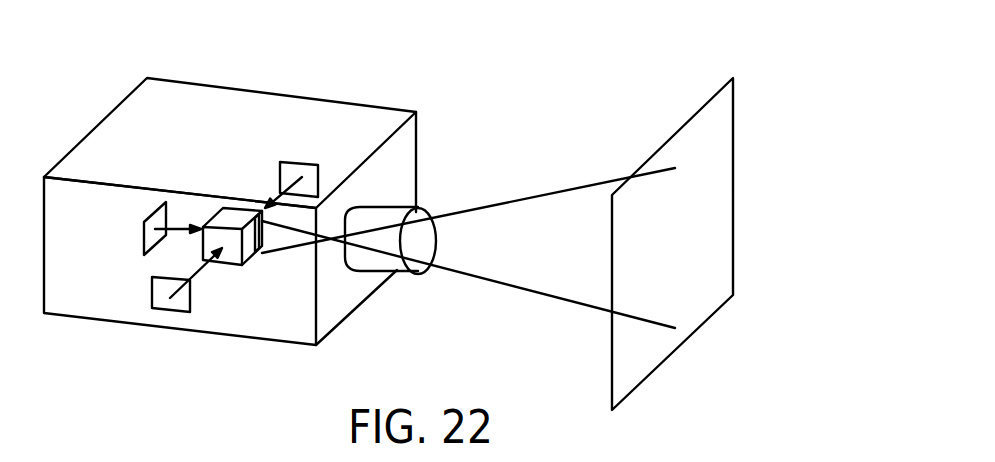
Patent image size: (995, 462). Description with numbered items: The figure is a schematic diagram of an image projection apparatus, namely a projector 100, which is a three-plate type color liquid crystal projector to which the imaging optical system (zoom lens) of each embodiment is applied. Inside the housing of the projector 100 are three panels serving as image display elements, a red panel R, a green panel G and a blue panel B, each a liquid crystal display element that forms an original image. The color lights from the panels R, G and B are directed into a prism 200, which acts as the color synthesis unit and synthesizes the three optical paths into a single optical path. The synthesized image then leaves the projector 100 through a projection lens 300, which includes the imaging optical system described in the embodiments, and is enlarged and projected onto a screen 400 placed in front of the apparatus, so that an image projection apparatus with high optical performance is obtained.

The projector 100 is at (125, 108).
The prism 200 is at (226, 260).
The projection lens 300 is at (397, 270).
The screen 400 is at (692, 136).
The R panel R is at (152, 288).
The G panel G is at (144, 230).
The B panel B is at (296, 168).